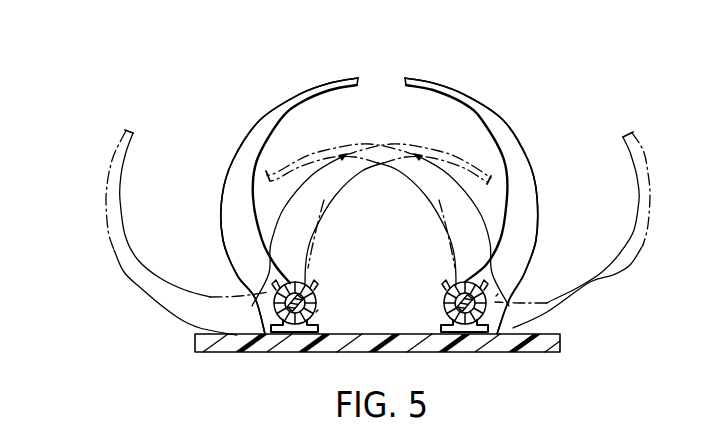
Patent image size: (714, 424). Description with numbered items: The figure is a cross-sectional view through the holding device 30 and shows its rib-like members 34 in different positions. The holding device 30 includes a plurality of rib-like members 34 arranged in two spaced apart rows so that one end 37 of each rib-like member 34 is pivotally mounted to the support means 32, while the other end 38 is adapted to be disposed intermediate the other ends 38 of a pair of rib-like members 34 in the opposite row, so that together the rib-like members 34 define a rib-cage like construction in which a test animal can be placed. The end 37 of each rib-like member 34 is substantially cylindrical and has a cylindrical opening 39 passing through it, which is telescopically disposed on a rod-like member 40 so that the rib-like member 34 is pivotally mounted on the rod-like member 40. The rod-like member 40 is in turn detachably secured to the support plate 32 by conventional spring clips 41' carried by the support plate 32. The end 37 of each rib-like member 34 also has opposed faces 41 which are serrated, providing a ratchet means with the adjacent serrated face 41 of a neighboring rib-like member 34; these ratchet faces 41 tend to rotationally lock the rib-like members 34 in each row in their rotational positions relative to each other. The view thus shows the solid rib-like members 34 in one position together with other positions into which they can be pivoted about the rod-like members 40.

The holding device 30 is at (574, 103).
The support means 32 is at (225, 346).
The rib-like member 34 is at (258, 116).
The end of rib-like member 37 is at (255, 277).
The other end of rib-like member 38 is at (357, 77).
The cylindrical opening 39 is at (272, 313).
The rod-like member 40 is at (318, 294).
The serrated face 41 is at (380, 258).
The spring clip 41' is at (472, 317).